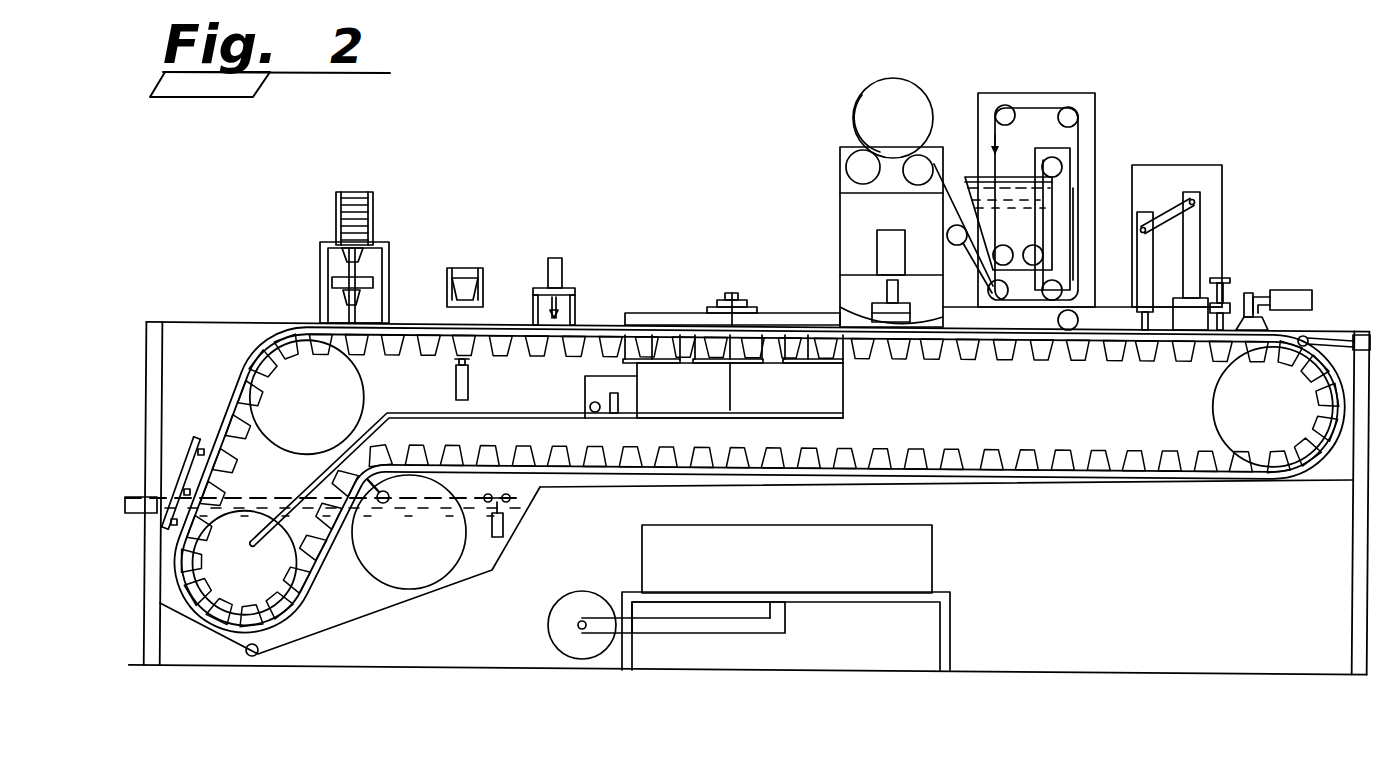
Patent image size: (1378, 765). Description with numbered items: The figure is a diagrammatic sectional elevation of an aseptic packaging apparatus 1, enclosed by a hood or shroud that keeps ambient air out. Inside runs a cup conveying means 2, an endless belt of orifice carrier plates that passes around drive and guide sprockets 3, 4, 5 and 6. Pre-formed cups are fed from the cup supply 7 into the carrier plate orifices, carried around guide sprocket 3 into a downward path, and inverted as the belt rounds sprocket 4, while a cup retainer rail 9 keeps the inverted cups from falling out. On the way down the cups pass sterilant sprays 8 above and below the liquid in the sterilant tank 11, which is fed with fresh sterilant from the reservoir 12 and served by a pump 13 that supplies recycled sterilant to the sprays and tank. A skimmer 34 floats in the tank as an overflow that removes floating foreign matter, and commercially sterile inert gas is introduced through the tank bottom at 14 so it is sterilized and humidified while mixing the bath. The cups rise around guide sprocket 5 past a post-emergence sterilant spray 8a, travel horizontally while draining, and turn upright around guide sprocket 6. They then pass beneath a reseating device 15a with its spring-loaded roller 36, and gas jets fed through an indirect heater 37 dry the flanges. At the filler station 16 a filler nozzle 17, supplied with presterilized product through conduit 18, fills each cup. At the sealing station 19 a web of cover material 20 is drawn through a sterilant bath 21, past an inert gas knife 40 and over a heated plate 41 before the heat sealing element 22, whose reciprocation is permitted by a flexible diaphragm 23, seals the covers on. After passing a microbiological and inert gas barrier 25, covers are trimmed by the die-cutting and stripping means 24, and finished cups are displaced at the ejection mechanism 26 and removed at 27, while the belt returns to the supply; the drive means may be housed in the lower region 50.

The aseptic packaging apparatus 1 is at (148, 345).
The cup conveying means 2 is at (252, 368).
The guide sprocket 3 is at (314, 405).
The sprocket 4 is at (252, 583).
The guide sprocket 5 is at (438, 550).
The guide sprocket 6 is at (1265, 406).
The cup supply 7 is at (336, 218).
The sterilant sprays 8 is at (180, 440).
The sterilant spray 8a is at (368, 515).
The cup retainer rail 9 is at (233, 396).
The sterilant tank 11 is at (333, 628).
The reservoir 12 is at (815, 572).
The pump 13 is at (563, 600).
The inert gas inlet 14 is at (245, 647).
The reseating device 15a is at (1340, 343).
The filler station 16 is at (1214, 196).
The filler nozzle 17 is at (1140, 318).
The conduit 18 is at (1201, 235).
The sealing station 19 is at (862, 220).
The web of cover material 20 is at (857, 98).
The sterilant bath 21 is at (975, 196).
The heat sealing element 22 is at (887, 290).
The diaphragm 23 is at (855, 315).
The die-cutting and stripping means 24 is at (562, 270).
The microbiological and inert gas barrier 25 is at (678, 313).
The ejection mechanism 26 is at (468, 380).
The cup removal 27 is at (447, 287).
The skimmer 34 is at (503, 530).
The spring-loaded roller 36 is at (1307, 337).
The indirect heater 37 is at (1293, 290).
The inert gas knife 40 is at (1031, 130).
The heated plate 41 is at (1075, 188).
The drive means location 50 is at (1166, 587).